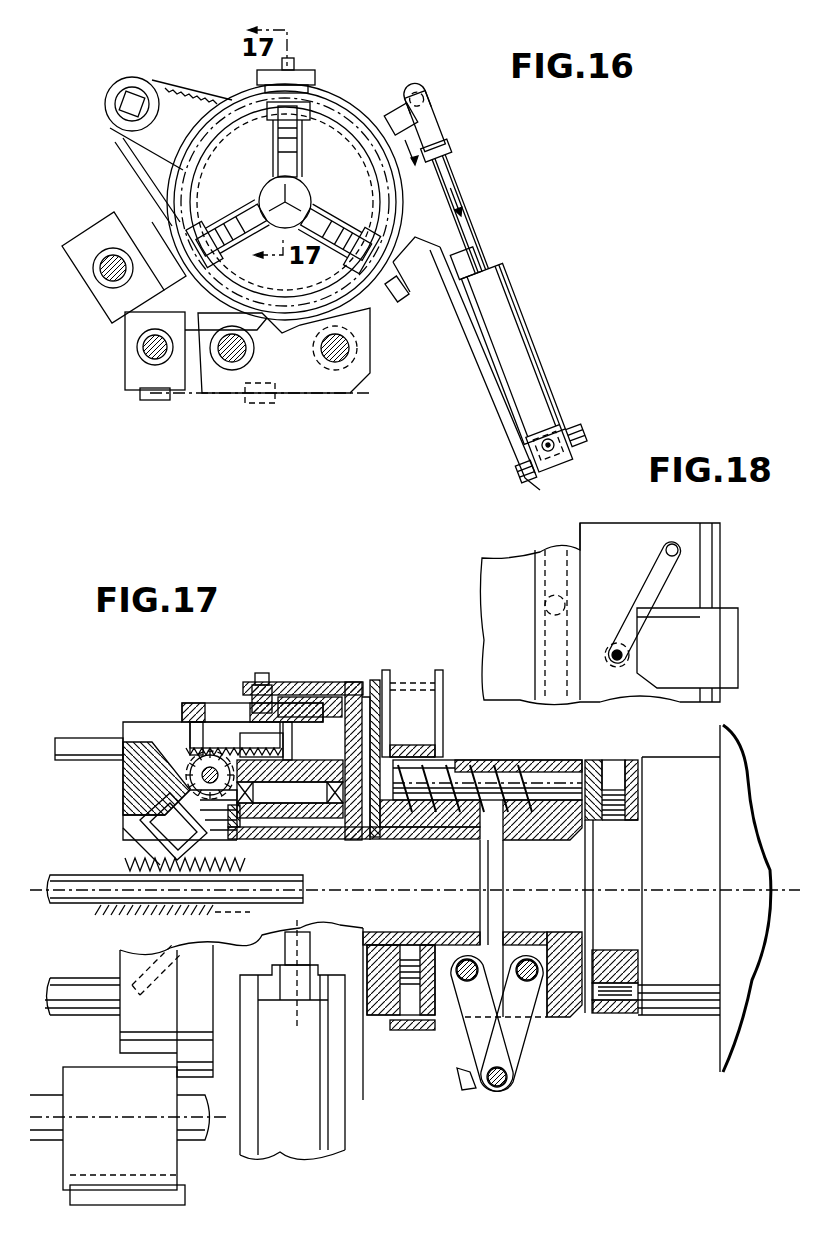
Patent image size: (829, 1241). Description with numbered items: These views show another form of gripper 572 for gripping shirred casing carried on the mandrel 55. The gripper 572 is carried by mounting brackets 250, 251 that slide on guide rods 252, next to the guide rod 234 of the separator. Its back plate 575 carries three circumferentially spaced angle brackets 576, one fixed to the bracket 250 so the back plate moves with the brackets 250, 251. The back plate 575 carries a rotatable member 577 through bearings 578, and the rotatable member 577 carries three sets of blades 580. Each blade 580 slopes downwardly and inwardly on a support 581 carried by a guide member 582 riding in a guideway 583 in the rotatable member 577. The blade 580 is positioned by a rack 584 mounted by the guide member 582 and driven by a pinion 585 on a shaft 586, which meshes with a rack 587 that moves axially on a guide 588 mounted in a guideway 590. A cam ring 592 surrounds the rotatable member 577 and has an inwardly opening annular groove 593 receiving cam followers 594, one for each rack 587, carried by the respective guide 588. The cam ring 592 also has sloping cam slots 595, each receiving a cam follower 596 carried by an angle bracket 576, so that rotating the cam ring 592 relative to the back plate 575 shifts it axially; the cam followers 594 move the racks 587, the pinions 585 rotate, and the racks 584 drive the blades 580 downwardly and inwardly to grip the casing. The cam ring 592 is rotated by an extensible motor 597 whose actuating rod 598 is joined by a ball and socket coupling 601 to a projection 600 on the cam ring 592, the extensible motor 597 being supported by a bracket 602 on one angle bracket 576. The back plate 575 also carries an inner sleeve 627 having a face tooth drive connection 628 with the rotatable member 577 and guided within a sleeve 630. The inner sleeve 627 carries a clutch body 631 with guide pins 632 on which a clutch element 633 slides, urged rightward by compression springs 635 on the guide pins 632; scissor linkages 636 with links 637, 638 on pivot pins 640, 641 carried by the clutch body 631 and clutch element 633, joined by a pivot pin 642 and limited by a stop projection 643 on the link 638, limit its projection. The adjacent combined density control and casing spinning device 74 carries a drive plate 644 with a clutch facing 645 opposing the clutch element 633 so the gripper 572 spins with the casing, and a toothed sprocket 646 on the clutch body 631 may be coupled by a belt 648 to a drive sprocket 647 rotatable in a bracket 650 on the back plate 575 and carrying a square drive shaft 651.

In FIG. 17, the mandrel 55 is at (52, 906).
In FIG. 17, the combined density control and casing spinning device 74 is at (697, 757).
In FIG. 16, the guide rod 234 is at (234, 365).
In FIG. 17, the guide rod 234 is at (45, 1143).
In FIG. 16, the mounting bracket 250 is at (88, 256).
In FIG. 16, the mounting bracket 251 is at (178, 398).
In FIG. 16, the guide rod 252 is at (150, 350).
In FIG. 17, the guide rod 252 is at (87, 1010).
In FIG. 16, the gripper 572 is at (338, 73).
In FIG. 18, the back plate 575 is at (714, 568).
In FIG. 17, the back plate 575 is at (363, 1090).
In FIG. 16, the angle brackets 576 is at (317, 78).
In FIG. 18, the angle brackets 576 is at (738, 648).
In FIG. 17, the angle brackets 576 is at (336, 680).
In FIG. 17, the rotatable member 577 is at (372, 680).
In FIG. 17, the bearings 578 is at (268, 818).
In FIG. 16, the blades 580 is at (258, 214).
In FIG. 17, the blades 580 is at (145, 850).
In FIG. 17, the support 581 is at (132, 812).
In FIG. 17, the guide member 582 is at (132, 760).
In FIG. 17, the guideway 583 is at (175, 915).
In FIG. 17, the rack 584 is at (138, 726).
In FIG. 17, the pinion 585 is at (182, 790).
In FIG. 17, the shaft 586 is at (188, 722).
In FIG. 17, the rack 587 is at (303, 890).
In FIG. 17, the guide 588 is at (230, 712).
In FIG. 17, the guideway 590 is at (296, 690).
In FIG. 18, the cam ring 592 is at (680, 524).
In FIG. 17, the cam ring 592 is at (196, 703).
In FIG. 17, the annular groove 593 is at (185, 703).
In FIG. 18, the cam followers 594 is at (546, 606).
In FIG. 17, the cam followers 594 is at (240, 740).
In FIG. 18, the cam slots 595 is at (656, 560).
In FIG. 17, the cam slots 595 is at (285, 720).
In FIG. 18, the cam follower 596 is at (630, 650).
In FIG. 17, the cam follower 596 is at (255, 683).
In FIG. 16, the extensible motor 597 is at (538, 345).
In FIG. 17, the extensible motor 597 is at (335, 1135).
In FIG. 16, the actuating rod 598 is at (448, 172).
In FIG. 17, the actuating rod 598 is at (322, 922).
In FIG. 16, the projection 600 is at (390, 120).
In FIG. 16, the ball and socket coupling 601 is at (426, 102).
In FIG. 16, the bracket 602 is at (490, 397).
In FIG. 17, the inner sleeve 627 is at (457, 835).
In FIG. 17, the face tooth drive connection 628 is at (214, 950).
In FIG. 17, the sleeve 630 is at (390, 836).
In FIG. 17, the clutch body 631 is at (382, 1010).
In FIG. 17, the guide pins 632 is at (540, 780).
In FIG. 17, the clutch element 633 is at (567, 1015).
In FIG. 17, the compression springs 635 is at (490, 765).
In FIG. 17, the scissor linkage 636 is at (528, 1075).
In FIG. 17, the link 637 is at (468, 1035).
In FIG. 17, the link 638 is at (520, 1040).
In FIG. 17, the pivot pin 640 is at (465, 958).
In FIG. 17, the pivot pin 641 is at (527, 958).
In FIG. 17, the pivot pin 642 is at (503, 1088).
In FIG. 17, the stop projection 643 is at (465, 1092).
In FIG. 17, the drive plate 644 is at (632, 968).
In FIG. 17, the clutch facing 645 is at (600, 955).
In FIG. 17, the toothed sprocket 646 is at (418, 757).
In FIG. 16, the drive sprocket 647 is at (126, 130).
In FIG. 16, the belt 648 is at (190, 98).
In FIG. 17, the belt 648 is at (415, 742).
In FIG. 16, the bracket 650 is at (150, 165).
In FIG. 17, the square drive shaft 651 is at (60, 740).